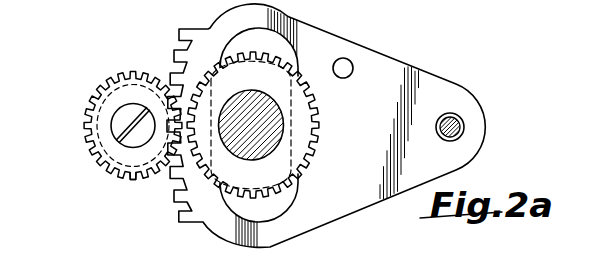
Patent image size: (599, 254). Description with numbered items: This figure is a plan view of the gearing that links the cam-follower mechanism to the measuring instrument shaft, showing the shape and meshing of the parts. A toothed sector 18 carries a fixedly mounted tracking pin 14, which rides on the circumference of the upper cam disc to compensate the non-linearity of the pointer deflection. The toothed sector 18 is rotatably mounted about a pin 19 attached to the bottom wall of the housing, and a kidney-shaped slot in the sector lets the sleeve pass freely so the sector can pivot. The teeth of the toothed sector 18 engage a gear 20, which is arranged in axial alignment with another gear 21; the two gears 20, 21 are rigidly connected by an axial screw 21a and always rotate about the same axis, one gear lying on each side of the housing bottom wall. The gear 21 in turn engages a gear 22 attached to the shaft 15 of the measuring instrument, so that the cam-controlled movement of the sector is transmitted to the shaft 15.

The tracking pin 14 is at (345, 58).
The shaft of the measuring instrument 15 is at (273, 126).
The toothed sector 18 is at (392, 67).
The pin 19 is at (463, 120).
The gear 20 is at (138, 181).
The gear 21 is at (84, 125).
The axial screw 21a is at (118, 137).
The gear 22 is at (298, 140).